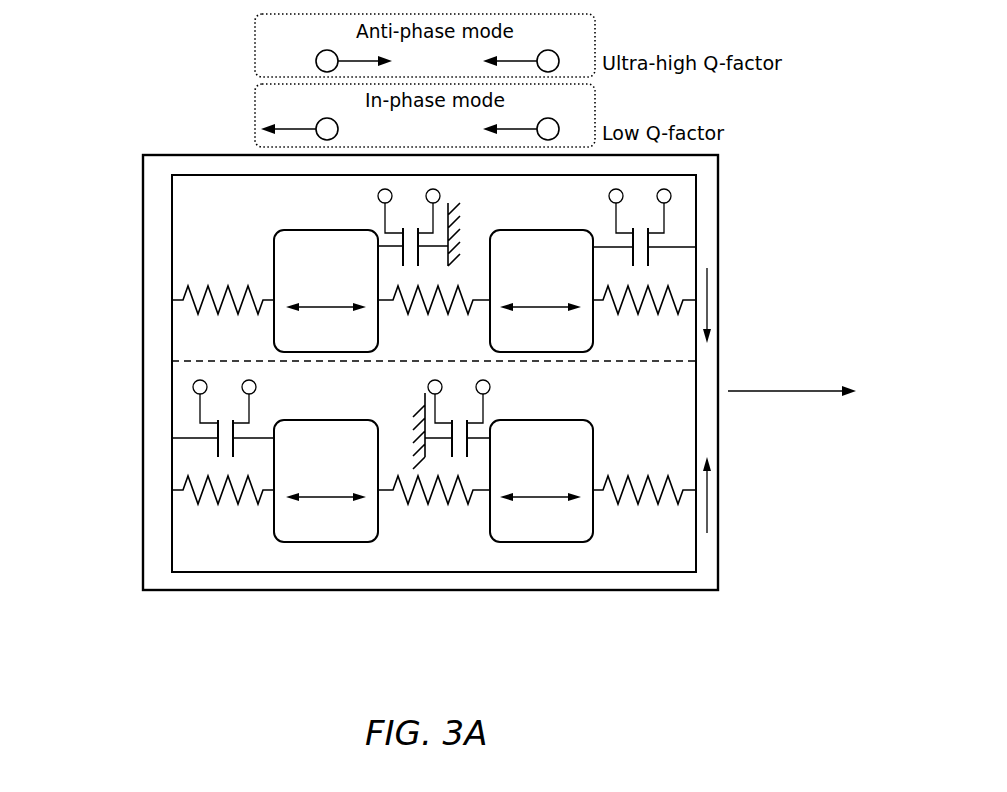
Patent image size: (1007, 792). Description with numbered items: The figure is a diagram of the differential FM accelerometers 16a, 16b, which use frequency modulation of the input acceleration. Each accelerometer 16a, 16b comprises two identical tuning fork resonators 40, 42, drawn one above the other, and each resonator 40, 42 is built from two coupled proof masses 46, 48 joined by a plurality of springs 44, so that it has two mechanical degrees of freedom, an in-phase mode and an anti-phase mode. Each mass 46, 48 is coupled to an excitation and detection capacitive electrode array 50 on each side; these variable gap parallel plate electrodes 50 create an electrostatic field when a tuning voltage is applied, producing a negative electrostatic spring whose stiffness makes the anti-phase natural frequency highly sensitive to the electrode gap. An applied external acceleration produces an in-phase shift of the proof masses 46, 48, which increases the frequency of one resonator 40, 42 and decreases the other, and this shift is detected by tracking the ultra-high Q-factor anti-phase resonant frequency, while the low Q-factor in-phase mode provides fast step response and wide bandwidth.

The FM accelerometer 16a is at (456, 370).
The FM accelerometer 16b is at (456, 370).
The tuning fork resonator 40 is at (718, 197).
The tuning fork resonator 42 is at (714, 553).
The spring 44 is at (225, 290).
The proof mass 46 is at (273, 334).
The proof mass 48 is at (545, 230).
The capacitive electrode 50 is at (407, 232).